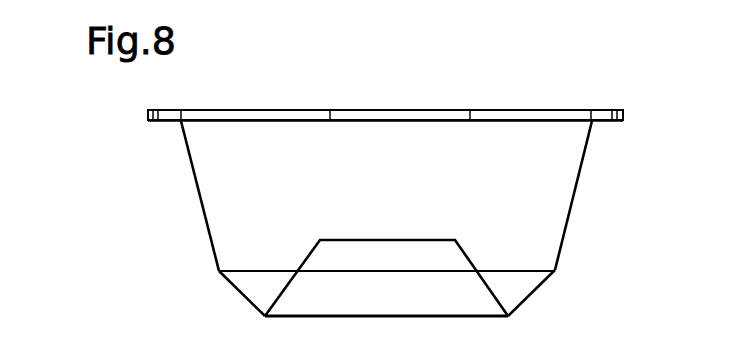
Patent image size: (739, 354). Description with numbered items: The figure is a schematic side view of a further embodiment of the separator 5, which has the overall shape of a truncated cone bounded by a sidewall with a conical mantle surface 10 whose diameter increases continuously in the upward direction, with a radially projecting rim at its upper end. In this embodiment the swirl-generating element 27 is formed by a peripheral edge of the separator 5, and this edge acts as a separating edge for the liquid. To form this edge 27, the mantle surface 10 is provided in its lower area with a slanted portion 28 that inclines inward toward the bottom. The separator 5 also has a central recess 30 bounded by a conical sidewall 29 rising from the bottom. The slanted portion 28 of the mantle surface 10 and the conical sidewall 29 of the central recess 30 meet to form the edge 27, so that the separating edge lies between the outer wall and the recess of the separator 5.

The separator 5 is at (548, 100).
The conical mantle surface 10 is at (197, 192).
The swirl-generating element 27 is at (258, 303).
The slanted portion 28 is at (533, 294).
The conical sidewall 29 is at (308, 259).
The central recess 30 is at (443, 253).